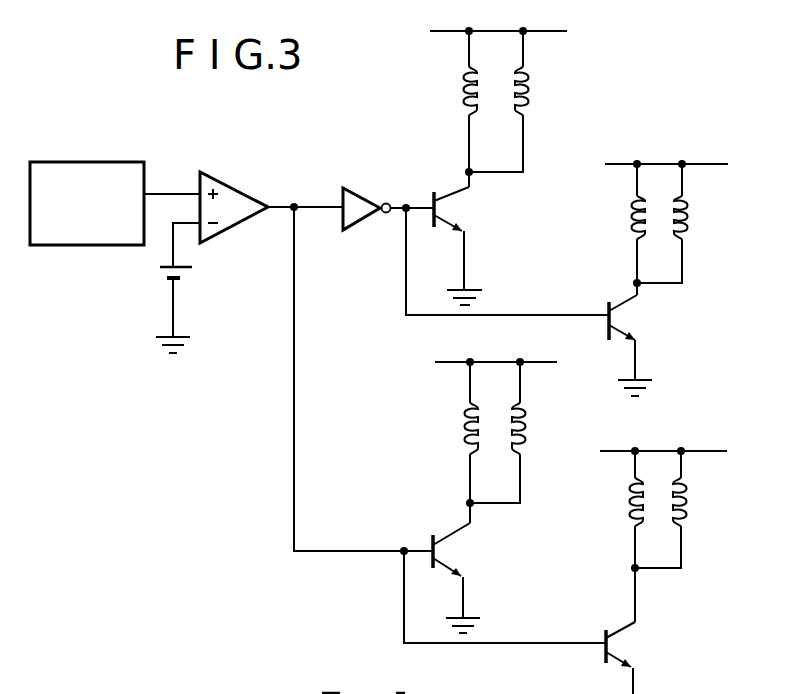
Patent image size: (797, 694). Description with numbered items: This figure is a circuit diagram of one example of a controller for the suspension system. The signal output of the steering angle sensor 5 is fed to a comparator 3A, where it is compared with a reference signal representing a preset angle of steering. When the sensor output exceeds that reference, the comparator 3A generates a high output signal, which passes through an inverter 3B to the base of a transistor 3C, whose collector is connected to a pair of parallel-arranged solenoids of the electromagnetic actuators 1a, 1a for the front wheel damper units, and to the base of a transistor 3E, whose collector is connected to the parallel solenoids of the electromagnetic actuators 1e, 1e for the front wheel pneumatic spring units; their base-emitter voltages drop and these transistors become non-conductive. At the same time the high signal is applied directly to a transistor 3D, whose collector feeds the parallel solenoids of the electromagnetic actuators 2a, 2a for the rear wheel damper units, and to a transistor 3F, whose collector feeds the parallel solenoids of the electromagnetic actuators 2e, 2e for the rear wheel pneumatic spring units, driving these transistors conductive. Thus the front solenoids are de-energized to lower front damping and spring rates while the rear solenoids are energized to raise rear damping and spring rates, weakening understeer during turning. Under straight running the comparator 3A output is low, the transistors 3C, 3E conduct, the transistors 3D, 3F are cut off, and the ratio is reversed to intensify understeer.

The steering angle sensor 5 is at (128, 162).
The comparator 3A is at (245, 196).
The inverter 3B is at (369, 196).
The transistor 3C is at (437, 222).
The transistor 3D is at (450, 558).
The transistor 3E is at (605, 301).
The transistor 3F is at (604, 630).
The electromagnetic actuator 1a is at (462, 96).
The electromagnetic actuator 1e is at (632, 235).
The electromagnetic actuator 2a is at (460, 436).
The electromagnetic actuator 2e is at (631, 513).